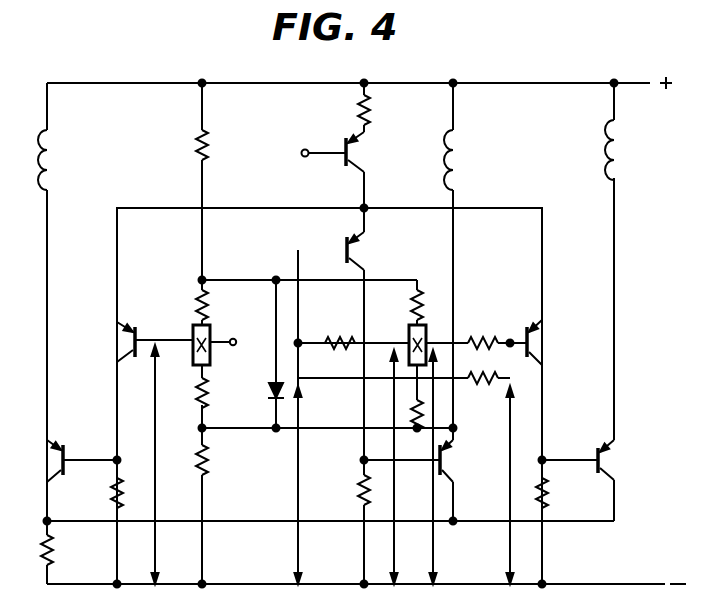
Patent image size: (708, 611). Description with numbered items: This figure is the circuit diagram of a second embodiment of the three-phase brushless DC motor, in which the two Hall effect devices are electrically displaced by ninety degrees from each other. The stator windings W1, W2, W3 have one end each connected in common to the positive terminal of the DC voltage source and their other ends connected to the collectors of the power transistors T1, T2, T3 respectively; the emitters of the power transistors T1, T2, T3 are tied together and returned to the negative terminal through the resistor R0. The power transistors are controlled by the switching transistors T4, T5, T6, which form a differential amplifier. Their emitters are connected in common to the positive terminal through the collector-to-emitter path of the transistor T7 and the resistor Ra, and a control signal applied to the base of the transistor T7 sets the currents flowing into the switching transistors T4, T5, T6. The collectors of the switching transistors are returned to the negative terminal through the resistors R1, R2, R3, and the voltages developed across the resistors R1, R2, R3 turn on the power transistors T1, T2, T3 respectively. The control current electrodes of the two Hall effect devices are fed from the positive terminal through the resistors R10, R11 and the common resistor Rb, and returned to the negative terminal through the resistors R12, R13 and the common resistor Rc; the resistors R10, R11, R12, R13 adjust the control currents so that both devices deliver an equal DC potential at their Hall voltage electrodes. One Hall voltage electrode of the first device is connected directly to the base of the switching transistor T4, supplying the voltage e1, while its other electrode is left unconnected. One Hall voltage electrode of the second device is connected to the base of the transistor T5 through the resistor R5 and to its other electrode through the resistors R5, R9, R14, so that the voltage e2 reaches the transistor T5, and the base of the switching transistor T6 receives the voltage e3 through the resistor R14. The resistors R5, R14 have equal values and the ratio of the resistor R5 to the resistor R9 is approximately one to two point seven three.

The stator winding W1 is at (55, 168).
The stator winding W2 is at (621, 147).
The stator winding W3 is at (458, 153).
The resistor Ra is at (370, 108).
The resistor Rb is at (208, 145).
The resistor Rc is at (206, 456).
The resistor R0 is at (52, 547).
The resistor R1 is at (112, 480).
The resistor R2 is at (550, 484).
The resistor R3 is at (356, 481).
The resistor R5 is at (484, 338).
The resistor R9 is at (484, 391).
The resistor R10 is at (208, 314).
The resistor R11 is at (412, 302).
The resistor R12 is at (208, 398).
The resistor R13 is at (406, 409).
The resistor R14 is at (328, 338).
The power transistor T1 is at (60, 448).
The power transistor T2 is at (610, 464).
The power transistor T3 is at (452, 466).
The switching transistor T4 is at (122, 322).
The switching transistor T5 is at (538, 340).
The switching transistor T6 is at (360, 252).
The transistor T7 is at (360, 154).
The voltage e1 is at (153, 464).
The voltage e2 is at (449, 467).
The voltage e3 is at (297, 485).